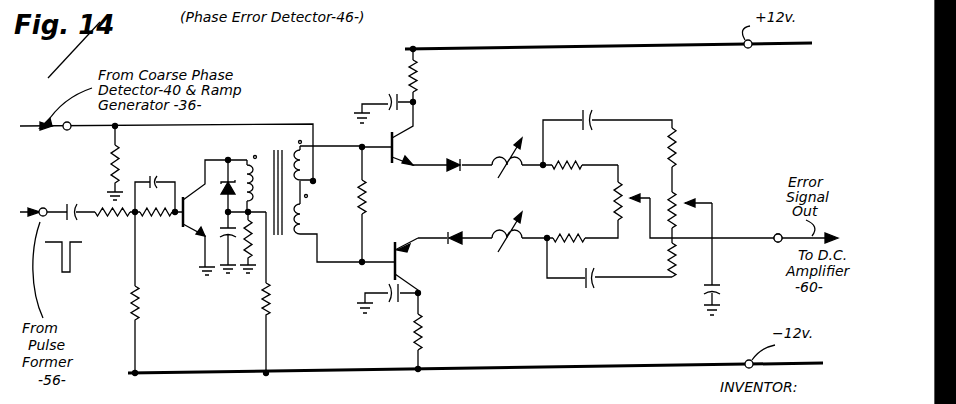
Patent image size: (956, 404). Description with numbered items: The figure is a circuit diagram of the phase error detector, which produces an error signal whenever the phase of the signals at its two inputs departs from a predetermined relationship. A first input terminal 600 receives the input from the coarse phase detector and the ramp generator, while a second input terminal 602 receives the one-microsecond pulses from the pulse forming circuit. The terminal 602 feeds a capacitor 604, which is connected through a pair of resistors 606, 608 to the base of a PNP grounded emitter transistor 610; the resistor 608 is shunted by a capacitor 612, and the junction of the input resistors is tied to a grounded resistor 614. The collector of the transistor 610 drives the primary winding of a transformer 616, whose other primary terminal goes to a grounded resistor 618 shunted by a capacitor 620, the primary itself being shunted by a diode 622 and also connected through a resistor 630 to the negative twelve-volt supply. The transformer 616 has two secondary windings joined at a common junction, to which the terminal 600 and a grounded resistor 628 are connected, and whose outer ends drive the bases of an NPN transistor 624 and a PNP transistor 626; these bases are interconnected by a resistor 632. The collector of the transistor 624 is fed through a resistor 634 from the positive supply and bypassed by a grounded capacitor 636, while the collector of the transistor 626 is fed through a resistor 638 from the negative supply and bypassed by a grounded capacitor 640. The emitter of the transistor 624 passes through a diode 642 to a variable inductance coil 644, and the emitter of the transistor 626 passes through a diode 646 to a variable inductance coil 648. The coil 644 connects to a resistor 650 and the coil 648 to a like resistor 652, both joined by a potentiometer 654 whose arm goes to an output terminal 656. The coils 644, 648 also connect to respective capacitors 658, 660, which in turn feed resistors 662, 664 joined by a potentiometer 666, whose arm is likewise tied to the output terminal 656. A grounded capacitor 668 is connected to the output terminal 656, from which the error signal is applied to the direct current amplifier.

The first input terminal 600 is at (68, 132).
The second input terminal 602 is at (44, 207).
The capacitor 604 is at (66, 205).
The resistor 606 is at (100, 219).
The resistor 608 is at (156, 229).
The PNP grounded emitter transistor 610 is at (183, 230).
The capacitor 612 is at (156, 176).
The grounded resistor 614 is at (165, 296).
The transformer 616 is at (280, 148).
The grounded resistor 618 is at (257, 246).
The capacitor 620 is at (238, 266).
The diode 622 is at (226, 180).
The NPN transistor 624 is at (390, 165).
The PNP transistor 626 is at (392, 272).
The grounded resistor 628 is at (125, 165).
The resistor 630 is at (272, 292).
The resistor 632 is at (367, 200).
The resistor 634 is at (416, 88).
The grounded capacitor 636 is at (385, 100).
The resistor 638 is at (425, 335).
The grounded capacitor 640 is at (396, 304).
The diode 642 is at (456, 158).
The variable inductance coil 644 is at (498, 157).
The diode 646 is at (447, 233).
The variable inductance coil 648 is at (500, 250).
The resistor 650 is at (578, 172).
The resistor 652 is at (568, 233).
The potentiometer 654 is at (614, 202).
The output terminal 656 is at (774, 234).
The capacitor 658 is at (592, 120).
The capacitor 660 is at (582, 290).
The resistor 662 is at (678, 137).
The resistor 664 is at (667, 262).
The potentiometer 666 is at (670, 198).
The grounded capacitor 668 is at (705, 292).